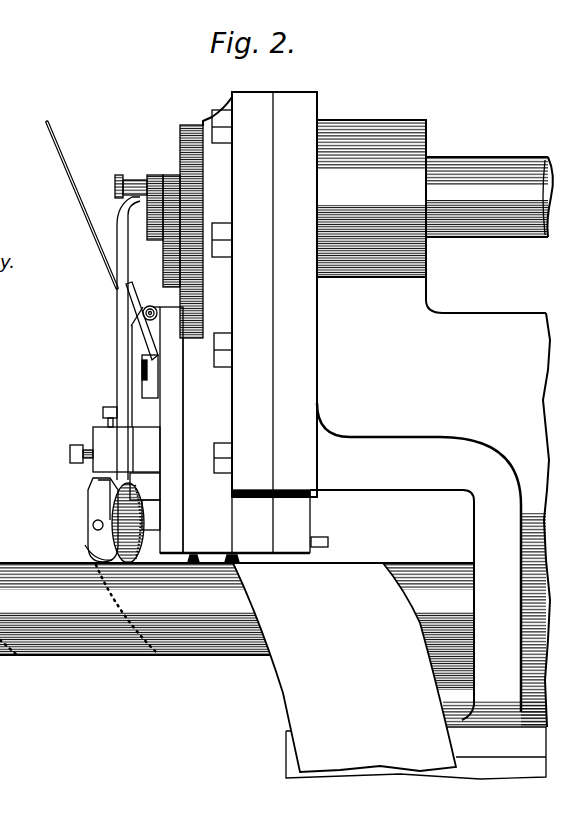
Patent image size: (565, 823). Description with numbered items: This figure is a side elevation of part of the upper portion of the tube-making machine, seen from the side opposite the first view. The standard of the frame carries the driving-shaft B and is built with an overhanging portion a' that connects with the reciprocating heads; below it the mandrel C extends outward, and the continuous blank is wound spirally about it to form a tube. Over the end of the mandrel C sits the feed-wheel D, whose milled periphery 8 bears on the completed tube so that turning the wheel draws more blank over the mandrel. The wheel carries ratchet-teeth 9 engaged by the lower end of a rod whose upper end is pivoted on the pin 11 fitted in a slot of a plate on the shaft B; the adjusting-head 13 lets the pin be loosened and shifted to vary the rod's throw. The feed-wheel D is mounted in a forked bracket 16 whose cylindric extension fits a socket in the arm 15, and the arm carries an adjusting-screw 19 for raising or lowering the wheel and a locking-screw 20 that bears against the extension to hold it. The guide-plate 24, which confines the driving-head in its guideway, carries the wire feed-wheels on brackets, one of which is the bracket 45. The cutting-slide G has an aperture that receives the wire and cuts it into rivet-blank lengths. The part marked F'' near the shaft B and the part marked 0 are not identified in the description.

The gear F'' is at (166, 223).
The driving-shaft B is at (476, 176).
The adjusting-head 13 is at (115, 184).
The pin or stud 11 is at (152, 307).
The bracket 45 is at (145, 350).
The adjusting-screw 19 is at (106, 407).
The arm 15 is at (150, 443).
The locking-screw 20 is at (70, 452).
The arm 0 is at (126, 462).
The forked bracket 16 is at (98, 502).
The feed-wheel D is at (110, 544).
The ratchet-teeth 9 is at (131, 517).
The milled periphery 8 is at (128, 540).
The guide-plate 24 is at (172, 446).
The overhanging portion a' is at (343, 453).
The cutting-slide G is at (329, 541).
The mandrel C is at (400, 567).